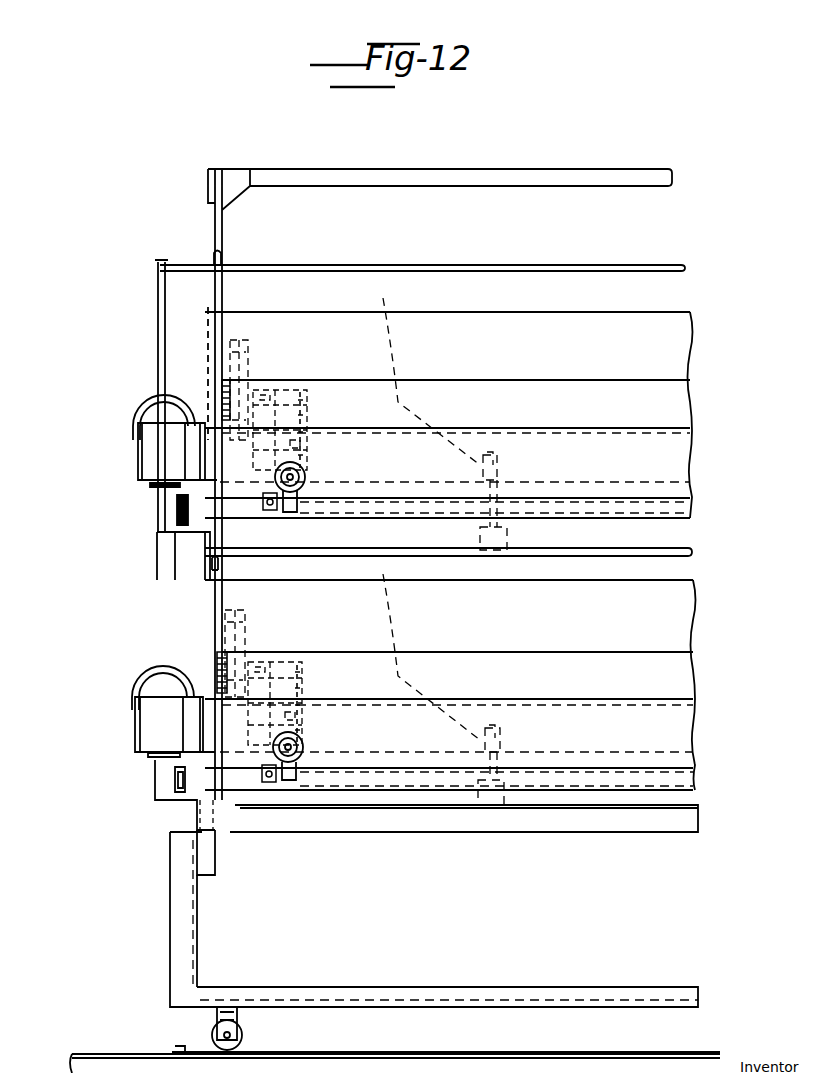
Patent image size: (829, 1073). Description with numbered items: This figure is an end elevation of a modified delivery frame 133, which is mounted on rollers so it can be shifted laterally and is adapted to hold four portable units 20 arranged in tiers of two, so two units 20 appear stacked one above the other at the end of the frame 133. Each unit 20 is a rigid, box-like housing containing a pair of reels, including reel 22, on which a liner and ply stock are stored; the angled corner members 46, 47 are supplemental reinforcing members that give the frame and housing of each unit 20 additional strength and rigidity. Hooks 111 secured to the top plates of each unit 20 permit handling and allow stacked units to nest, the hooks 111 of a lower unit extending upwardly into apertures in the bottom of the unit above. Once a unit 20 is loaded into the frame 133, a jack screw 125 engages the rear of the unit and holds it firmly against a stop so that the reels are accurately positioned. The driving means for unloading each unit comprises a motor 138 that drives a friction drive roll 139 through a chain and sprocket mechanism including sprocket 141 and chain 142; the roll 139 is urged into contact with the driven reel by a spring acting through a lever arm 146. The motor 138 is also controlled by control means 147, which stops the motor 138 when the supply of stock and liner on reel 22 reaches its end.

The portable unit 20 is at (453, 580).
The reel 22 is at (227, 632).
The angled corner member 46 is at (683, 632).
The angled corner member 47 is at (680, 725).
The hook 111 is at (219, 574).
The jack screw 125 is at (289, 763).
The delivery frame 133 is at (200, 902).
The motor 138 is at (136, 693).
The friction drive roll 139 is at (220, 658).
The sprocket 141 is at (305, 703).
The chain 142 is at (302, 681).
The lever arm 146 is at (262, 503).
The control means 147 is at (422, 543).